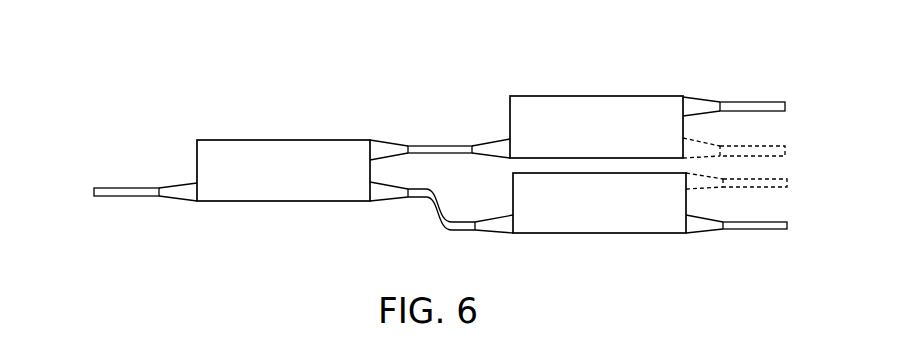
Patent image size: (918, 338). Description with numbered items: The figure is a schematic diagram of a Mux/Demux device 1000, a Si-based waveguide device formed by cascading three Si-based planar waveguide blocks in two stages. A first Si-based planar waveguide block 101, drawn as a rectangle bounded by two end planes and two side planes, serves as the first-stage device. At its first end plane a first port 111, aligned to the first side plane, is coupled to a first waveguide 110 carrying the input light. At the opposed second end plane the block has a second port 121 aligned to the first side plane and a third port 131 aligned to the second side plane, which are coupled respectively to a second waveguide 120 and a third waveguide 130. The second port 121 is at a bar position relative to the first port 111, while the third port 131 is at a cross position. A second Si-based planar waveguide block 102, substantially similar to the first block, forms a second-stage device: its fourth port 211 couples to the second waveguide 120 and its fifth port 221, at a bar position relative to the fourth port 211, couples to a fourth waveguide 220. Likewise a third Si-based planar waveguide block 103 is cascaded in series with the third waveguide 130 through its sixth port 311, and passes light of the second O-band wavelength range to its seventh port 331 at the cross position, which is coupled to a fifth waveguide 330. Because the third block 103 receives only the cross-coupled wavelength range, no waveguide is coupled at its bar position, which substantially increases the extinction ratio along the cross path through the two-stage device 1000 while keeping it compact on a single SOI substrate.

The Mux/Demux device 1000 is at (324, 43).
The first Si-based planar waveguide block 101 is at (290, 151).
The second Si-based planar waveguide block 102 is at (600, 222).
The third Si-based planar waveguide block 103 is at (597, 112).
The first waveguide 110 is at (152, 196).
The first port 111 is at (201, 193).
The second waveguide 120 is at (428, 200).
The second port 121 is at (366, 196).
The third waveguide 130 is at (435, 141).
The third port 131 is at (367, 153).
The fourth port 211 is at (515, 226).
The fourth waveguide 220 is at (735, 225).
The fifth port 221 is at (683, 226).
The sixth port 311 is at (511, 150).
The fifth waveguide 330 is at (713, 104).
The seventh port 331 is at (681, 110).